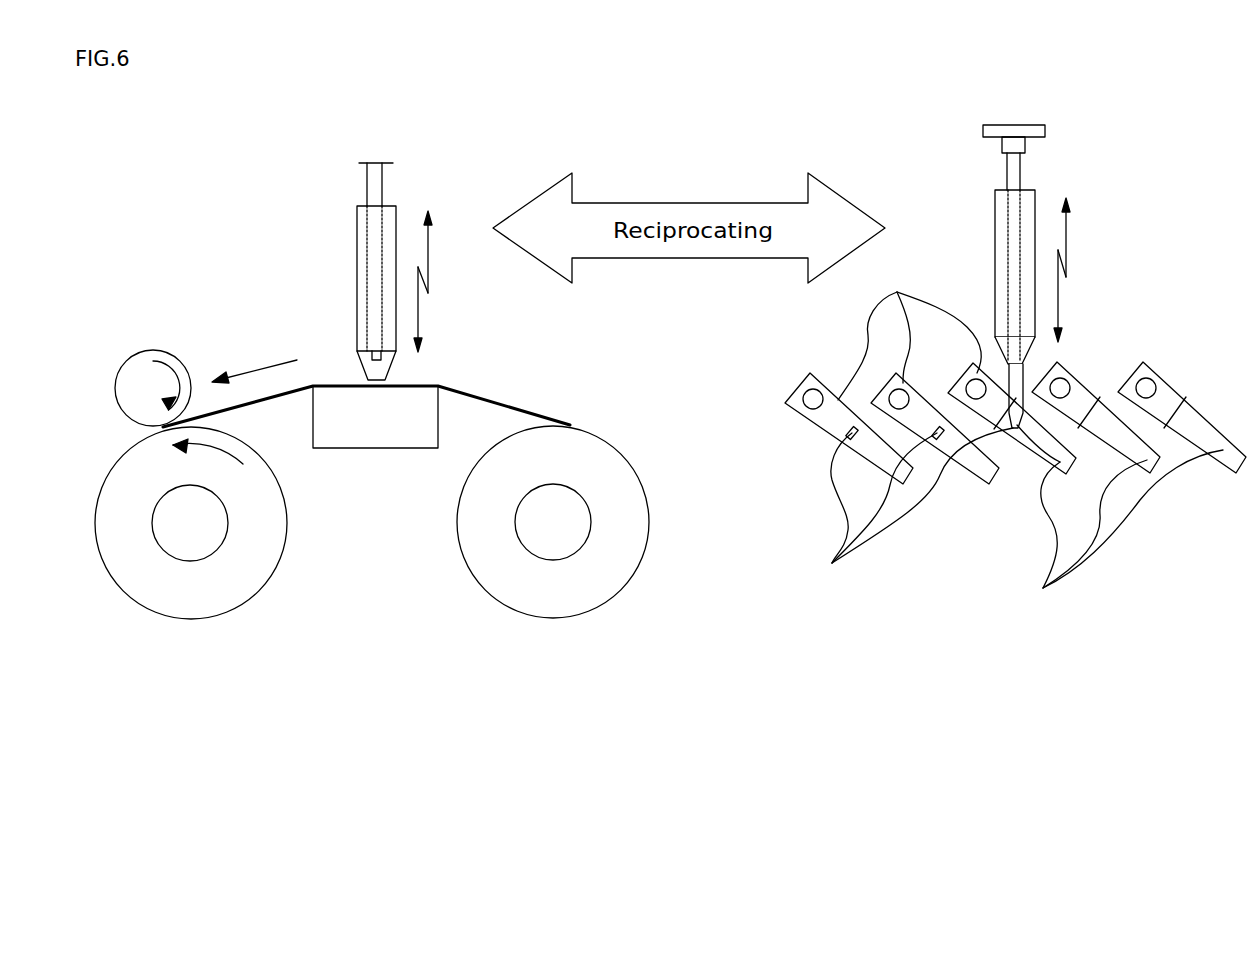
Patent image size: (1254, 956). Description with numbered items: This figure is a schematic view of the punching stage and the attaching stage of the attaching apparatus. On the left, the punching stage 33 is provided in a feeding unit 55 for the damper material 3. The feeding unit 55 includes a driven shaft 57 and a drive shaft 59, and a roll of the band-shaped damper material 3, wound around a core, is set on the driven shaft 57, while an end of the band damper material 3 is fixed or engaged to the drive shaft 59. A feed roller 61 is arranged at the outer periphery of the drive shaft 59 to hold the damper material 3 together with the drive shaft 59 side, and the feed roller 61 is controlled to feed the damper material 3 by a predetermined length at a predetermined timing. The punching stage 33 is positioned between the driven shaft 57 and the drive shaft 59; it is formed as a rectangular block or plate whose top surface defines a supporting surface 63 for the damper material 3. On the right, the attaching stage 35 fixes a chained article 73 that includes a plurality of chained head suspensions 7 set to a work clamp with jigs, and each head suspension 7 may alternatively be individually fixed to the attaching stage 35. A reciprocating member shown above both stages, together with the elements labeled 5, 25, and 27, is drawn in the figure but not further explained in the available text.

The damper material 3 is at (488, 400).
The first lamellar sheet 5 is at (914, 510).
The head suspension 7 is at (897, 292).
The syringe dispenser 25 is at (390, 230).
The plunger 27 is at (373, 187).
The punching stage 33 is at (383, 423).
The attaching stage 35 is at (920, 610).
The feeding unit 55 is at (322, 648).
The driven shaft 57 is at (550, 522).
The drive shaft 59 is at (190, 523).
The feed roller 61 is at (147, 360).
The supporting surface 63 is at (345, 382).
The chained article 73 is at (1122, 340).